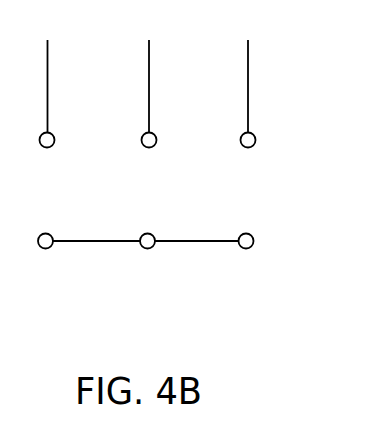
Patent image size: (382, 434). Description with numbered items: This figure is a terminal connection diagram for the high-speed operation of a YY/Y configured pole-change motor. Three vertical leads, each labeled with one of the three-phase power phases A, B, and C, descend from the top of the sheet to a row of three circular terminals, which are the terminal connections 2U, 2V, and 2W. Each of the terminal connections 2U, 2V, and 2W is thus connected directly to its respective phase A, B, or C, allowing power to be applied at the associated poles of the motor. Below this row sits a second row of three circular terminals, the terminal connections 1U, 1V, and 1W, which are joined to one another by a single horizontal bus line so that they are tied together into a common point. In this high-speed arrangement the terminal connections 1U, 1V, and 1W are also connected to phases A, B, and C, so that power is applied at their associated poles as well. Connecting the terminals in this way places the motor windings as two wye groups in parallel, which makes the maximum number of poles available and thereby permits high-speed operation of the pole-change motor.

The phase A is at (48, 73).
The phase B is at (149, 73).
The phase C is at (248, 73).
The terminal connection 1U is at (88, 228).
The terminal connection 1V is at (189, 228).
The terminal connection 1W is at (247, 228).
The terminal connection 2U is at (46, 154).
The terminal connection 2V is at (148, 154).
The terminal connection 2W is at (246, 154).